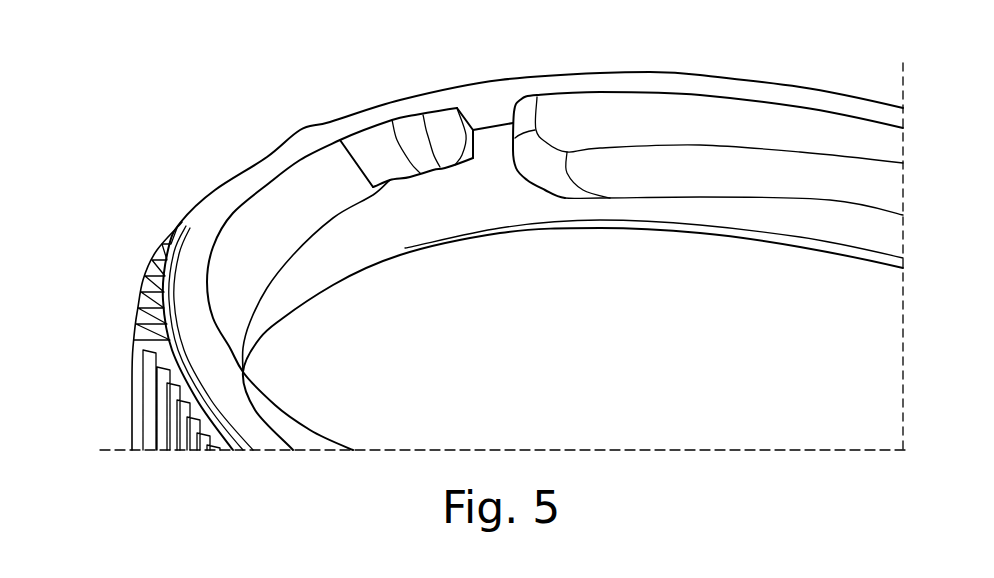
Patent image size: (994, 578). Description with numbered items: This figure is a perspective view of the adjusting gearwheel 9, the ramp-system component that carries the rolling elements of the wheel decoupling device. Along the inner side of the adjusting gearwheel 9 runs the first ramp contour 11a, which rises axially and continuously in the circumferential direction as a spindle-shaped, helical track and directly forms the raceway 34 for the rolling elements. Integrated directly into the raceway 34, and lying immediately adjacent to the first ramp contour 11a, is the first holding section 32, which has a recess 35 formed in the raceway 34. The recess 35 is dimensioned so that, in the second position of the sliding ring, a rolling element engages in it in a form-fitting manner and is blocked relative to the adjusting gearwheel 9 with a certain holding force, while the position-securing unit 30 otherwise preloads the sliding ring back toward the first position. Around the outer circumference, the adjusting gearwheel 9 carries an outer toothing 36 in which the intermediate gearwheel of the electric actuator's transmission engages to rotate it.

The position-securing unit 30 is at (435, 97).
The adjusting gearwheel 9 is at (320, 135).
The recess 35 is at (407, 127).
The holding section 32 is at (422, 158).
The raceway 34 is at (291, 205).
The first ramp contour 11a is at (240, 304).
The outer toothing 36 is at (137, 291).